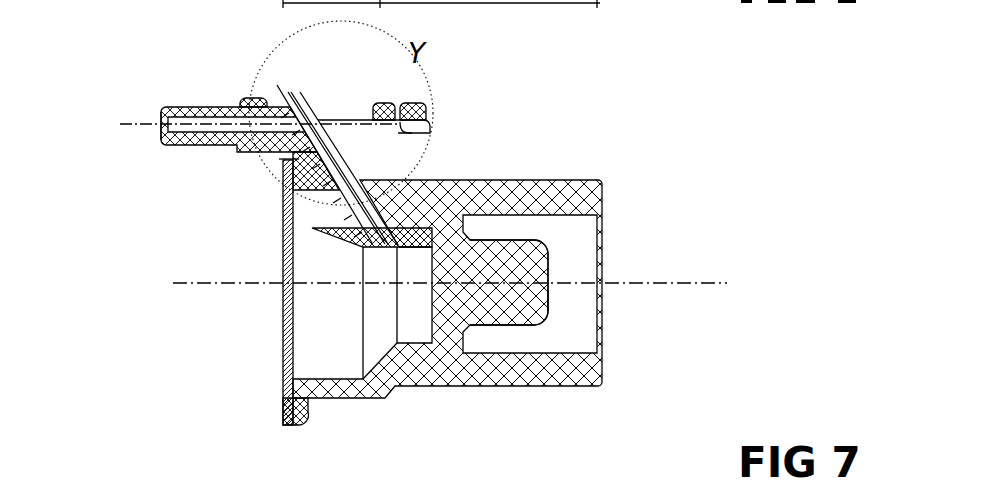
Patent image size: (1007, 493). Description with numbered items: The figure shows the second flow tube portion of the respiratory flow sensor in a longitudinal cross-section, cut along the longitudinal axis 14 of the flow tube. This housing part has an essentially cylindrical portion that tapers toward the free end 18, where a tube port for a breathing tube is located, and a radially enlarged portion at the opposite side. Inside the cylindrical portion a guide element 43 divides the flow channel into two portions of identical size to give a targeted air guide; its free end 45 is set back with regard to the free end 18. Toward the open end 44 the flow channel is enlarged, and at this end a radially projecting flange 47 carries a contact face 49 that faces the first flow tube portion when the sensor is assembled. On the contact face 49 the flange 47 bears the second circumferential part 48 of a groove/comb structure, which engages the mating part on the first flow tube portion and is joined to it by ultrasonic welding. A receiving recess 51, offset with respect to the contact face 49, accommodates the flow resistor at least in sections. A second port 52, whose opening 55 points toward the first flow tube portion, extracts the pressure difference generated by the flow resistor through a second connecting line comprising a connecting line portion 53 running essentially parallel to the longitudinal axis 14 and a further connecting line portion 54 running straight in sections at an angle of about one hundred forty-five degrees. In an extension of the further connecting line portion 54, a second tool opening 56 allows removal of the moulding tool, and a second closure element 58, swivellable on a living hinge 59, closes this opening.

The longitudinal axis 14 is at (675, 285).
The free end 18 is at (604, 327).
The guide element 43 is at (536, 272).
The open end 44 is at (283, 315).
The free end of guide element 45 is at (556, 301).
The flange 47 is at (308, 416).
The second circumferential part of groove/comb structure 48 is at (290, 160).
The contact face 49 is at (283, 210).
The receiving recess 51 is at (284, 250).
The second port 52 is at (217, 123).
The connecting line portion 53 is at (241, 99).
The further connecting line portion 54 is at (356, 152).
The opening 55 is at (162, 127).
The second tool opening 56 is at (291, 110).
The second closure element 58 is at (430, 133).
The living hinge 59 is at (353, 118).